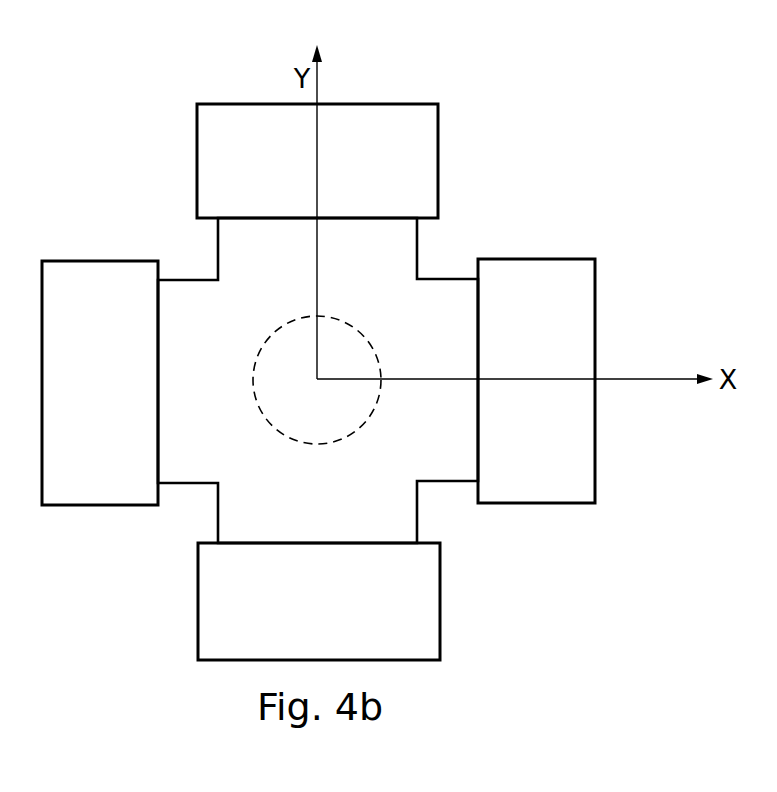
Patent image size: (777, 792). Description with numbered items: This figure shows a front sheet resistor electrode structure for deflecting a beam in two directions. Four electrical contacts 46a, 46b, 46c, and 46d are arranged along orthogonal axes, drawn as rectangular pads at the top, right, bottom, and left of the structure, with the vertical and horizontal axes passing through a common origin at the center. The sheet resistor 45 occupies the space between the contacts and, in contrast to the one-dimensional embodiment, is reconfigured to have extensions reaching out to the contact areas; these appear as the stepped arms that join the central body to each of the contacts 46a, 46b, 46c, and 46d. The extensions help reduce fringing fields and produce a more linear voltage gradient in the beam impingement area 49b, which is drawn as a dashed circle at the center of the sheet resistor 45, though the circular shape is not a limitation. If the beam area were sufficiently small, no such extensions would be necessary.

The sheet resistor 45 is at (318, 380).
The electrical contact 46a is at (317, 161).
The electrical contact 46b is at (536, 381).
The electrical contact 46c is at (319, 601).
The electrical contact 46d is at (100, 383).
The beam impingement area 49b is at (317, 380).